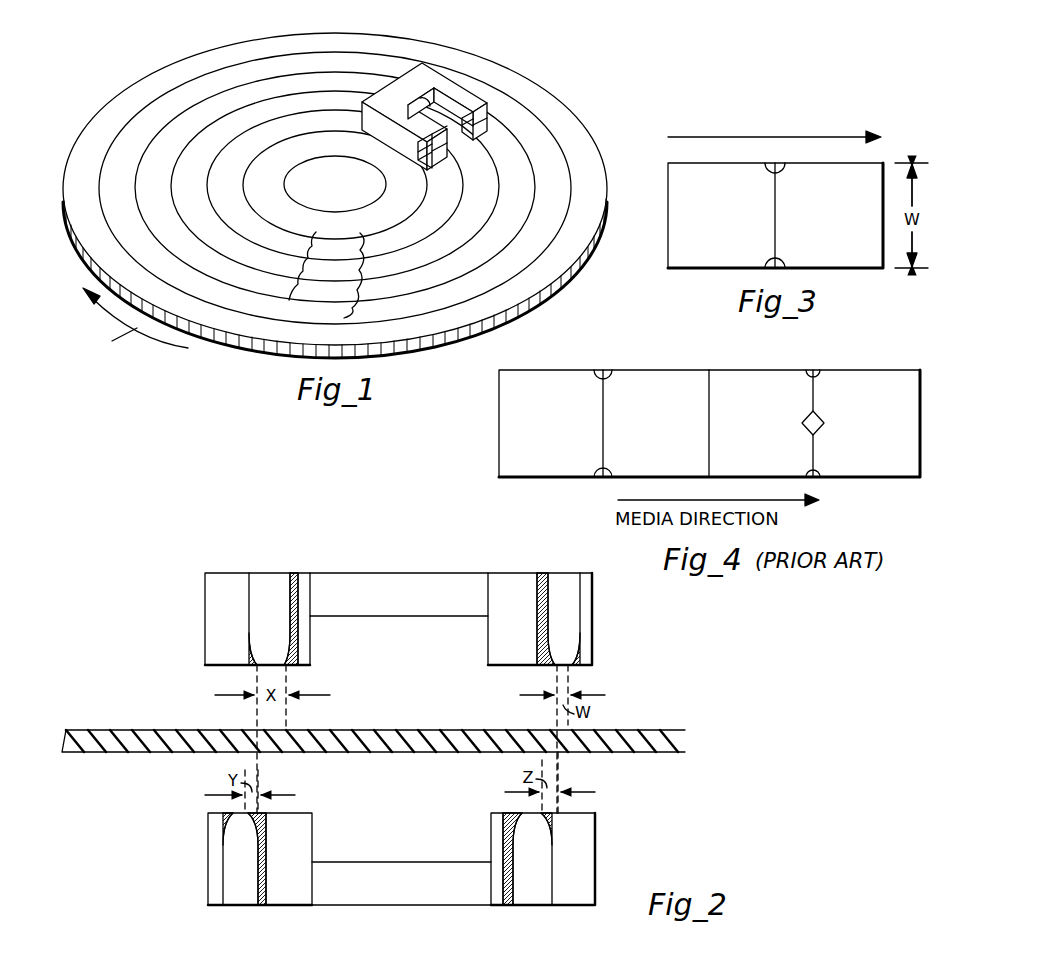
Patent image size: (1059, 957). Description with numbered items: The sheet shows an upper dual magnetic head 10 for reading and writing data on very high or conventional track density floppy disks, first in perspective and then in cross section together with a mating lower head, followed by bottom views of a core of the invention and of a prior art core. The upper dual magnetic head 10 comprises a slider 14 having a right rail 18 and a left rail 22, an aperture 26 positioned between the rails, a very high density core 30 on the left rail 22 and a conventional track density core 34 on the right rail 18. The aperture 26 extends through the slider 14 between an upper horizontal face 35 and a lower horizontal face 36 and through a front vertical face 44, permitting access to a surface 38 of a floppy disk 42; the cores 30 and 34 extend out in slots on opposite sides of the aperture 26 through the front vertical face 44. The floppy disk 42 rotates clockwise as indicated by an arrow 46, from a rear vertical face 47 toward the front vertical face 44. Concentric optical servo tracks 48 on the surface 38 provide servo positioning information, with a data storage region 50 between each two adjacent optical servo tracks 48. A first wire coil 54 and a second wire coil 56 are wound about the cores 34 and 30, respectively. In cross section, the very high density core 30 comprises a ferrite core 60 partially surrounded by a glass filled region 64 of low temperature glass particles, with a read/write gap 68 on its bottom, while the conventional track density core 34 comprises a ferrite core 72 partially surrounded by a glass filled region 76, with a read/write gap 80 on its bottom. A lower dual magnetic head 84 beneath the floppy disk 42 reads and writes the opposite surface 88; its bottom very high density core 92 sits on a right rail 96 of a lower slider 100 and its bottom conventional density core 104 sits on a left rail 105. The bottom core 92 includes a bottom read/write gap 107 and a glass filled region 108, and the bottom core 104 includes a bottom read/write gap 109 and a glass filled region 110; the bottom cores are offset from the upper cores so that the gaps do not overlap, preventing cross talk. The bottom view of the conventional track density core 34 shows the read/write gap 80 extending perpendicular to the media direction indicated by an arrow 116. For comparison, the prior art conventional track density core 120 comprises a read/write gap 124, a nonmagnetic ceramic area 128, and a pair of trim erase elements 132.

In FIG. 1, the upper dual magnetic head 10 is at (436, 107).
In FIG. 2, the upper dual magnetic head 10 is at (397, 610).
In FIG. 1, the slider 14 is at (422, 78).
In FIG. 1, the right rail 18 is at (414, 153).
In FIG. 2, the right rail 18 is at (312, 651).
In FIG. 1, the left rail 22 is at (472, 83).
In FIG. 2, the left rail 22 is at (488, 643).
In FIG. 1, the aperture 26 is at (418, 101).
In FIG. 1, the very high density core 30 is at (470, 131).
In FIG. 2, the very high density core 30 is at (586, 609).
In FIG. 1, the conventional track density core 34 is at (440, 161).
In FIG. 2, the conventional track density core 34 is at (242, 596).
In FIG. 1, the upper horizontal face 35 is at (430, 78).
In FIG. 1, the lower horizontal face 36 is at (391, 160).
In FIG. 1, the surface 38 is at (372, 231).
In FIG. 2, the surface 38 is at (618, 731).
In FIG. 1, the floppy disk 42 is at (247, 362).
In FIG. 2, the floppy disk 42 is at (609, 755).
In FIG. 1, the front vertical face 44 is at (455, 153).
In FIG. 1, the arrow 46 is at (100, 304).
In FIG. 1, the rear vertical face 47 is at (356, 113).
In FIG. 1, the optical servo tracks 48 is at (318, 240).
In FIG. 1, the data storage region 50 is at (360, 238).
In FIG. 1, the first wire coil 54 is at (422, 174).
In FIG. 1, the second wire coil 56 is at (482, 118).
In FIG. 2, the ferrite core 60 is at (566, 579).
In FIG. 2, the glass filled region 64 is at (537, 646).
In FIG. 2, the read/write gap 68 is at (565, 668).
In FIG. 2, the ferrite core 72 is at (268, 581).
In FIG. 2, the glass filled region 76 is at (292, 669).
In FIG. 3, the read/write gap 80 is at (775, 230).
In FIG. 2, the read/write gap 80 is at (262, 667).
In FIG. 2, the lower dual magnetic head 84 is at (395, 861).
In FIG. 2, the surface 88 is at (140, 757).
In FIG. 2, the bottom very high density core 92 is at (218, 893).
In FIG. 2, the right rail 96 is at (208, 843).
In FIG. 2, the lower slider 100 is at (382, 903).
In FIG. 2, the bottom conventional density core 104 is at (557, 881).
In FIG. 2, the left rail 105 is at (596, 830).
In FIG. 2, the bottom read/write gap 107 is at (243, 812).
In FIG. 2, the glass filled region 108 is at (267, 824).
In FIG. 2, the bottom read/write gap 109 is at (536, 811).
In FIG. 2, the glass filled region 110 is at (503, 830).
In FIG. 3, the arrow 116 is at (670, 141).
In FIG. 4, the conventional track density core 120 is at (546, 486).
In FIG. 4, the read/write gap 124 is at (603, 431).
In FIG. 4, the nonmagnetic ceramic area 128 is at (825, 423).
In FIG. 4, the trim erase elements 132 is at (813, 451).